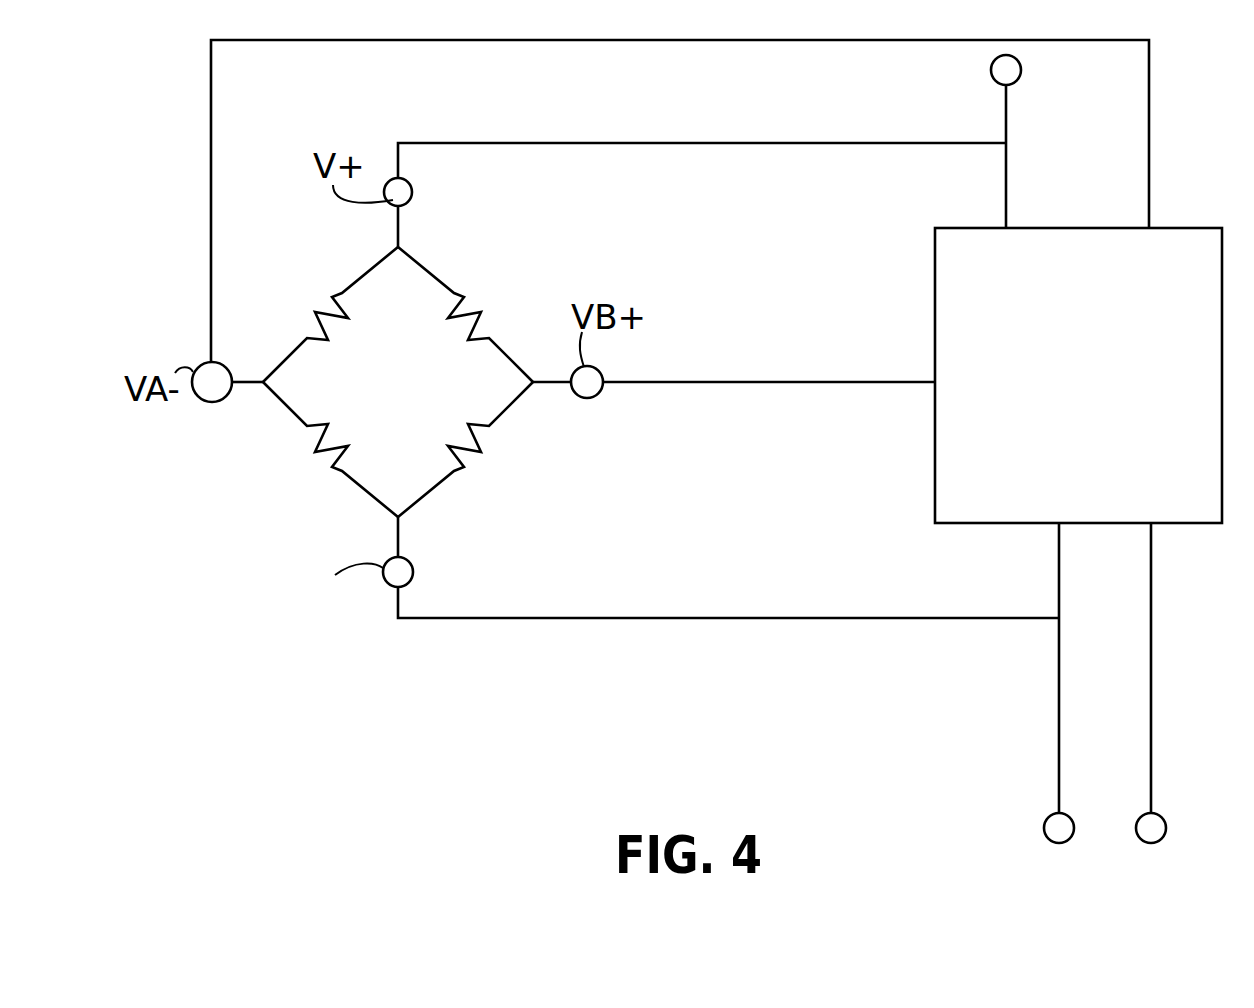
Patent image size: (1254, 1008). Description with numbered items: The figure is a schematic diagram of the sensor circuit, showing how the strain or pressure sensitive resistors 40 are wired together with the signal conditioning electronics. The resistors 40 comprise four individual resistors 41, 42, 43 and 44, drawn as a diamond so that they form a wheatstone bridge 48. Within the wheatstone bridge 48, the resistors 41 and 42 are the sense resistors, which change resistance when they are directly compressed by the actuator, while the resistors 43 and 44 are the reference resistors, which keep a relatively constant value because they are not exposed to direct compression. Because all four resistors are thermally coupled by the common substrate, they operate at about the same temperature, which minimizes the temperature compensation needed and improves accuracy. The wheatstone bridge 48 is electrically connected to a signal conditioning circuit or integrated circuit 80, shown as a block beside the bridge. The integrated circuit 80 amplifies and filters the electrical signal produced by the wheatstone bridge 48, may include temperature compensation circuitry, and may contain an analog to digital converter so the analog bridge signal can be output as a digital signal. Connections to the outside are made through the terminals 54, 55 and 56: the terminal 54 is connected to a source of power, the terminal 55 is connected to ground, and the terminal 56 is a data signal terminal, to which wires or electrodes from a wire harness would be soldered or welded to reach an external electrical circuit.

The strain or pressure sensitive resistors 40 is at (504, 377).
The resistor 41 is at (316, 462).
The resistor 42 is at (462, 297).
The resistor 43 is at (343, 293).
The resistor 44 is at (482, 450).
The wheatstone bridge 48 is at (283, 625).
The terminal 54 is at (1150, 832).
The terminal 55 is at (1003, 73).
The terminal 56 is at (1057, 832).
The integrated circuit 80 is at (1098, 384).